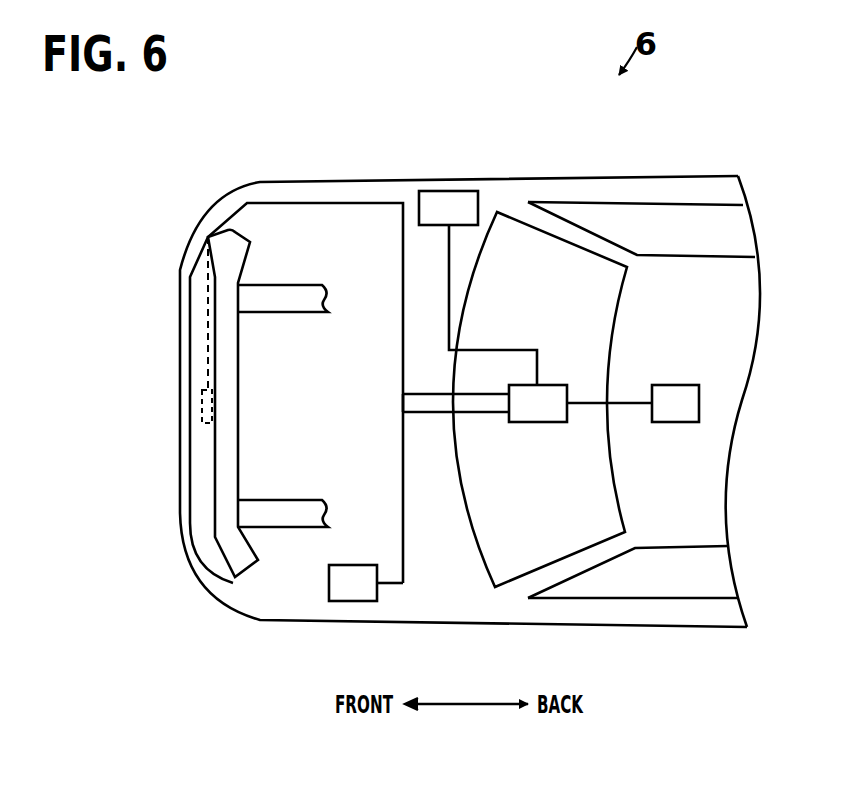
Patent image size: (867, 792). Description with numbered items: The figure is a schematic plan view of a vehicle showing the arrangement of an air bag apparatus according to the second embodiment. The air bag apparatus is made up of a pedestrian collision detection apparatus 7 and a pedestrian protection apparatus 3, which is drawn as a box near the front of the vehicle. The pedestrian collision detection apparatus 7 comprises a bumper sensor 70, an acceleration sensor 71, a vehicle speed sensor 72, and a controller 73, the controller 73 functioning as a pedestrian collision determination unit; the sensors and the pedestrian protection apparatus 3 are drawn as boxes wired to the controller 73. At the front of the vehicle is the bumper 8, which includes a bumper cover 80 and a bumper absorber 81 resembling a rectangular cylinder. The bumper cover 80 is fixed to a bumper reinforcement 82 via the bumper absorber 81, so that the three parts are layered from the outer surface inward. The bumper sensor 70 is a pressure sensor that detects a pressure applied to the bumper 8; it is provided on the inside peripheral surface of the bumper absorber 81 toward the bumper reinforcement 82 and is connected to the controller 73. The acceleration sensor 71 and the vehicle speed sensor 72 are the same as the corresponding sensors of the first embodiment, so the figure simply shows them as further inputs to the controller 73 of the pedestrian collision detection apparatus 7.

The pedestrian protection apparatus 3 is at (448, 196).
The pedestrian collision detection apparatus 7 is at (521, 455).
The bumper 8 is at (180, 298).
The bumper sensor 70 is at (198, 393).
The acceleration sensor 71 is at (676, 385).
The vehicle speed sensor 72 is at (352, 601).
The controller 73 is at (551, 422).
The bumper cover 80 is at (180, 407).
The bumper absorber 81 is at (197, 445).
The bumper reinforcement 82 is at (223, 485).